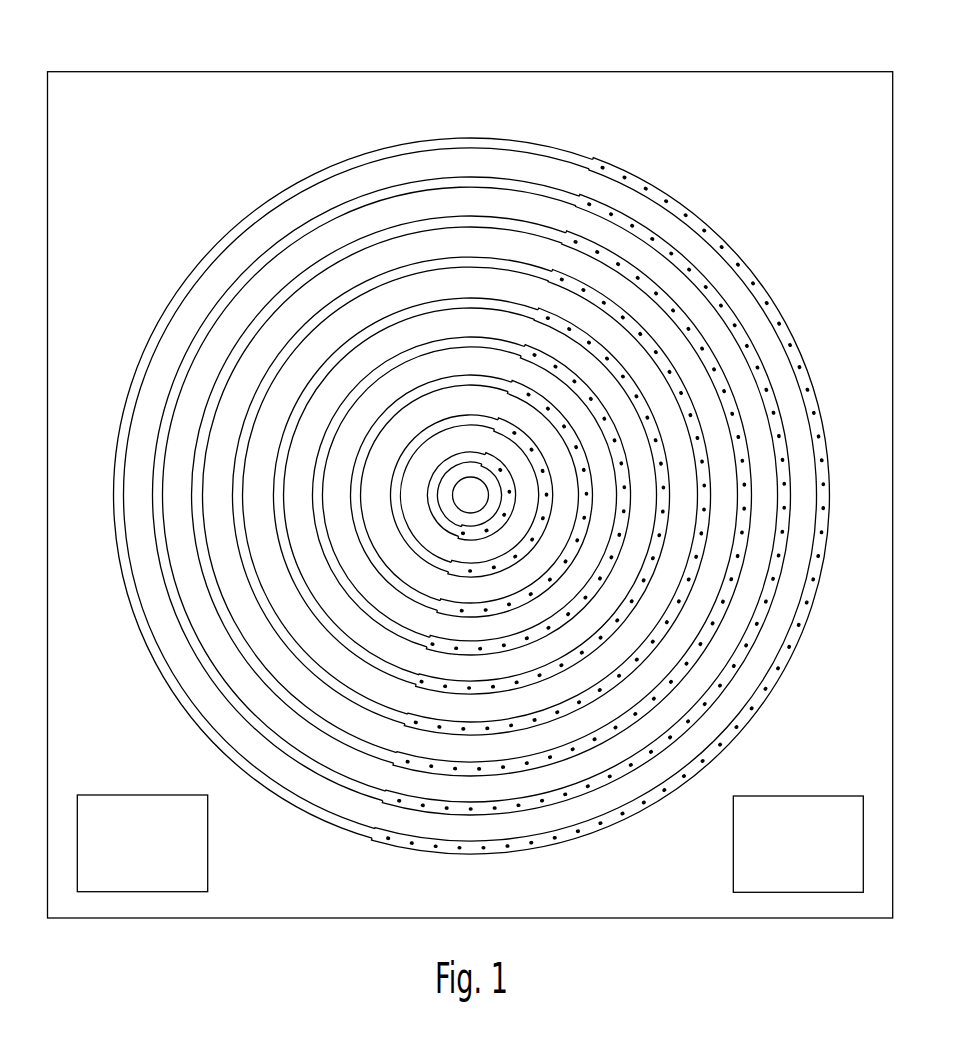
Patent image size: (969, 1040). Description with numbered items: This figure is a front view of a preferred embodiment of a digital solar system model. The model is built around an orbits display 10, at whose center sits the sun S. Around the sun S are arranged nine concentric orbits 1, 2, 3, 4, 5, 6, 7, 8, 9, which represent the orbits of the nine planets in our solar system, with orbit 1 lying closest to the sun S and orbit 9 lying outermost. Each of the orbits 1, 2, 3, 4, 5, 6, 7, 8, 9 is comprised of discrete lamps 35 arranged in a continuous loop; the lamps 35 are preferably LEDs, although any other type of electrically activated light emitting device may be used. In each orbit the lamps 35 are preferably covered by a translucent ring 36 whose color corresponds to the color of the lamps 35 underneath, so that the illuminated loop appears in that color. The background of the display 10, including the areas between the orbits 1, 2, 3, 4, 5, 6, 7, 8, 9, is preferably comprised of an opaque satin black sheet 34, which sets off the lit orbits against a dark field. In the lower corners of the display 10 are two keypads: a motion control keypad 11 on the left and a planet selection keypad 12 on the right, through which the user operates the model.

The orbits display 10 is at (781, 72).
The motion control keypad 11 is at (140, 795).
The planet selection keypad 12 is at (798, 796).
The sun S is at (463, 509).
The orbit 1 is at (428, 495).
The orbit 2 is at (401, 495).
The orbit 3 is at (363, 495).
The orbit 4 is at (323, 495).
The orbit 5 is at (283, 495).
The orbit 6 is at (242, 495).
The orbit 7 is at (203, 495).
The orbit 8 is at (165, 495).
The orbit 9 is at (457, 484).
The opaque satin black sheet 34 is at (676, 165).
The lamps 35 is at (604, 163).
The translucent ring 36 is at (566, 152).